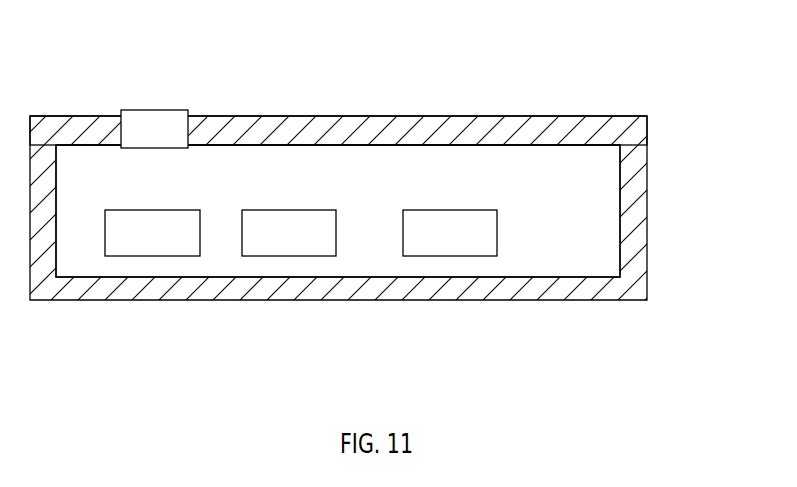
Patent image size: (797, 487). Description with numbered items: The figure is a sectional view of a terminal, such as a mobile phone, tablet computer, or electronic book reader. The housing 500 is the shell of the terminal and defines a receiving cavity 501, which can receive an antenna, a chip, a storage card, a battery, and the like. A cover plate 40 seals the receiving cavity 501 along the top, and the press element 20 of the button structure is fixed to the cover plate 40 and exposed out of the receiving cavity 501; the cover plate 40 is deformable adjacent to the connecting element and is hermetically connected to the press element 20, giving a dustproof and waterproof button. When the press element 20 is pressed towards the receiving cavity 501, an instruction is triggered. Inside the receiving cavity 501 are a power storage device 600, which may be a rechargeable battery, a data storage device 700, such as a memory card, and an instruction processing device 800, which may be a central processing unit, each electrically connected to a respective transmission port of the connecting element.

The press element 20 is at (162, 127).
The cover plate 40 is at (253, 127).
The housing 500 is at (637, 215).
The receiving cavity 501 is at (566, 197).
The power storage device 600 is at (152, 243).
The data storage device 700 is at (263, 241).
The instruction processing device 800 is at (447, 237).